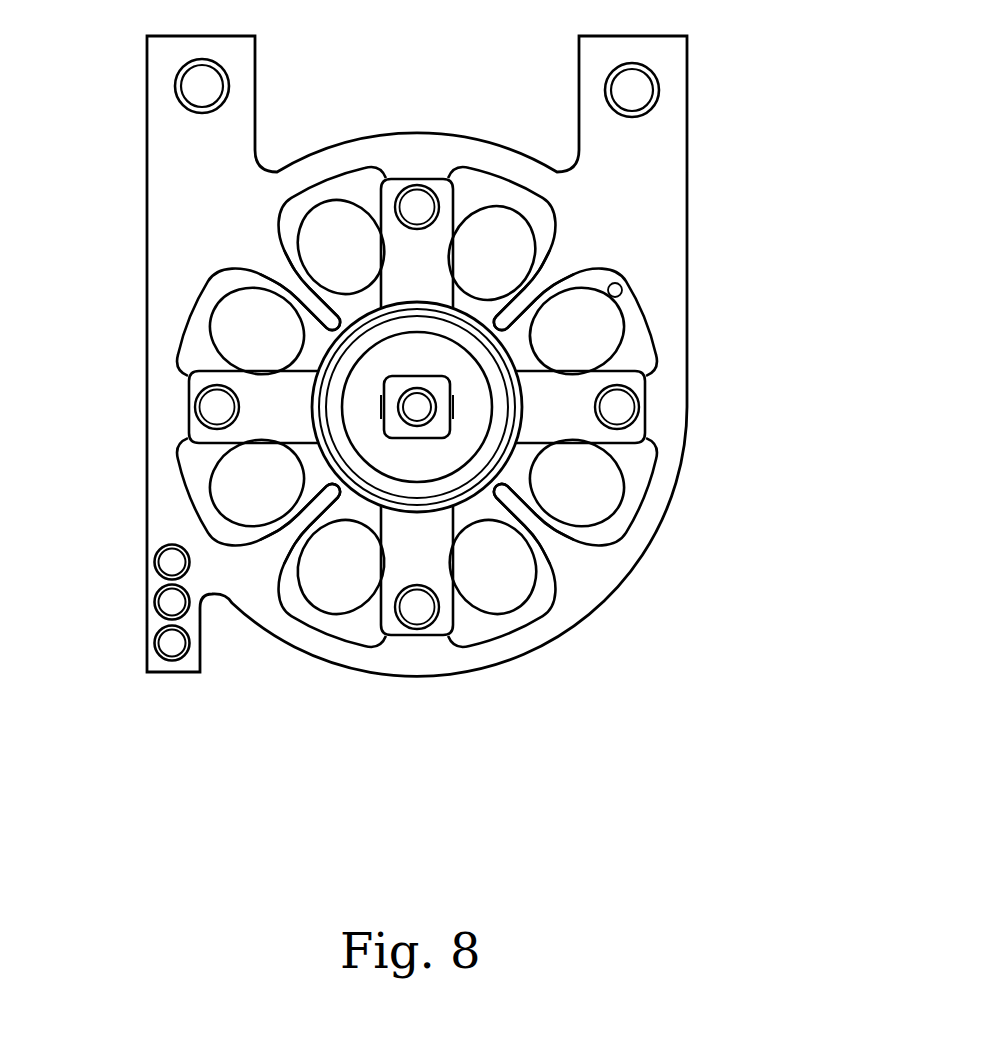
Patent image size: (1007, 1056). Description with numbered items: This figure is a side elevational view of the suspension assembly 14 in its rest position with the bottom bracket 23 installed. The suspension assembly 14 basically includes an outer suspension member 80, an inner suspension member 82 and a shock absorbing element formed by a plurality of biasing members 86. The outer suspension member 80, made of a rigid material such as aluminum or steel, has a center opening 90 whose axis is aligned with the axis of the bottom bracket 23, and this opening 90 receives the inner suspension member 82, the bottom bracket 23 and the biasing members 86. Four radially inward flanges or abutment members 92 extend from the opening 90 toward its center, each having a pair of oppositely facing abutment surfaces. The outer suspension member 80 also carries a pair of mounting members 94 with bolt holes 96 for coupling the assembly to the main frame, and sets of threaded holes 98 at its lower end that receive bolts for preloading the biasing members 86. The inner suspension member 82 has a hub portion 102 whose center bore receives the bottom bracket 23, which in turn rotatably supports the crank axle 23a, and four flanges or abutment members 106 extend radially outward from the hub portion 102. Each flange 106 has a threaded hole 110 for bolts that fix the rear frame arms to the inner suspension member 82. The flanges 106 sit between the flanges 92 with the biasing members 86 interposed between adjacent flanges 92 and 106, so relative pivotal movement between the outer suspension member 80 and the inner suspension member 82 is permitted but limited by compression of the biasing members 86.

The suspension assembly 14 is at (757, 145).
The bottom bracket 23 is at (500, 370).
The bicycle crank axle 23a is at (393, 418).
The outer suspension member 80 is at (692, 353).
The inner suspension member 82 is at (470, 623).
The biasing members 86 is at (337, 202).
The center opening 90 is at (622, 288).
The abutment members 92 is at (300, 303).
The mounting members 94 is at (255, 67).
The bolt holes 96 is at (202, 110).
The threaded holes 98 is at (165, 563).
The hub portion 102 is at (657, 440).
The abutment members 106 is at (449, 180).
The threaded hole 110 is at (412, 220).